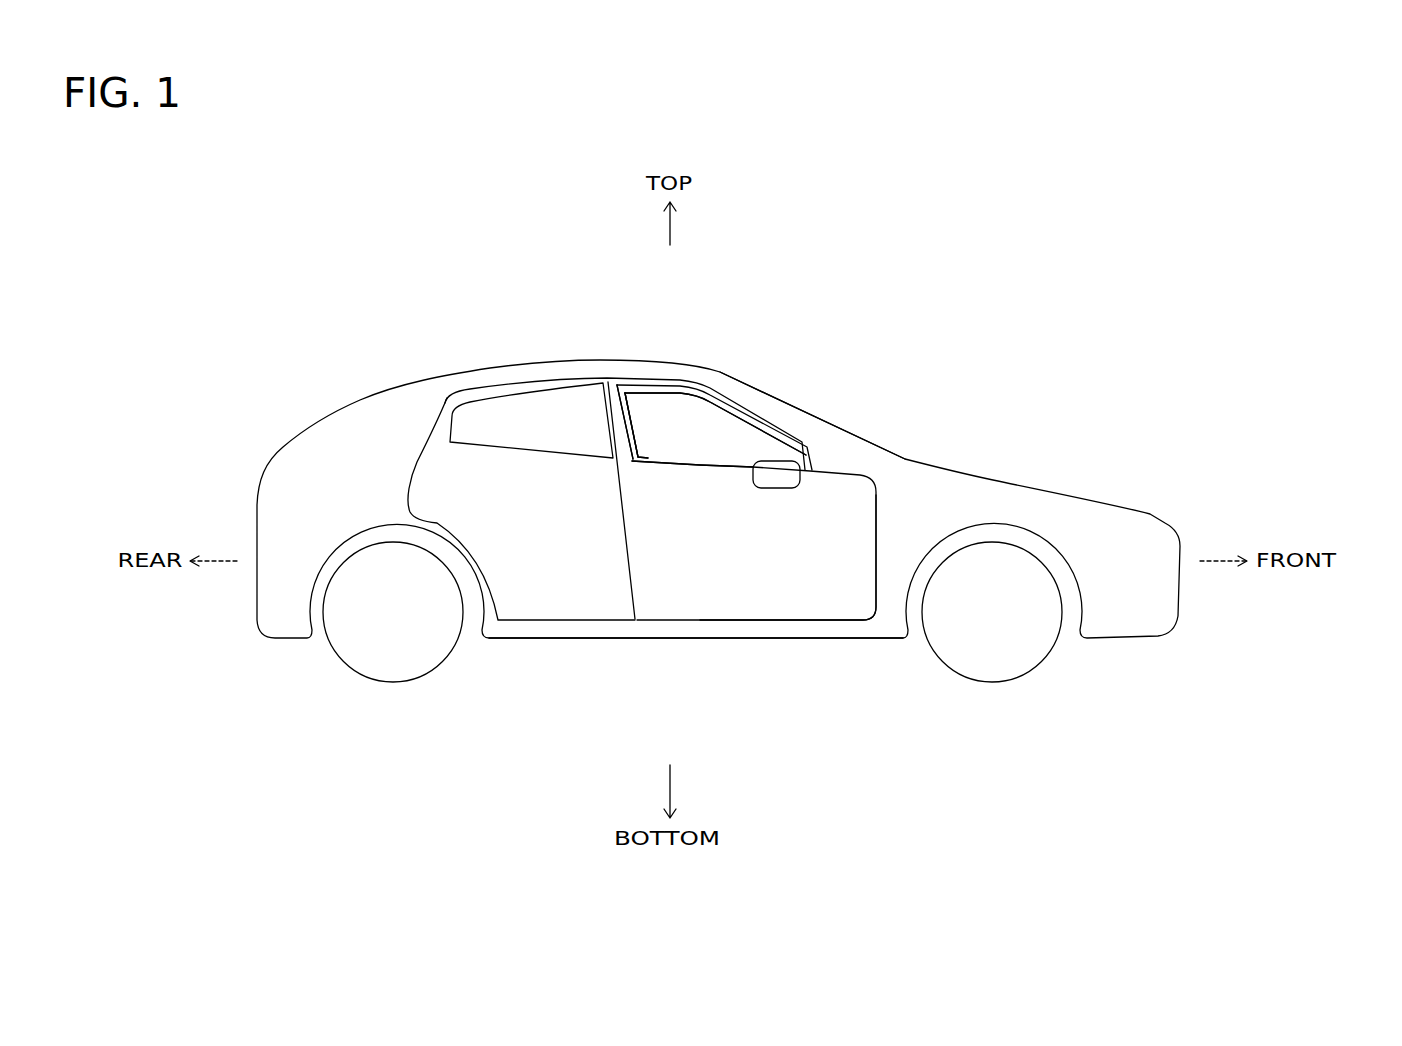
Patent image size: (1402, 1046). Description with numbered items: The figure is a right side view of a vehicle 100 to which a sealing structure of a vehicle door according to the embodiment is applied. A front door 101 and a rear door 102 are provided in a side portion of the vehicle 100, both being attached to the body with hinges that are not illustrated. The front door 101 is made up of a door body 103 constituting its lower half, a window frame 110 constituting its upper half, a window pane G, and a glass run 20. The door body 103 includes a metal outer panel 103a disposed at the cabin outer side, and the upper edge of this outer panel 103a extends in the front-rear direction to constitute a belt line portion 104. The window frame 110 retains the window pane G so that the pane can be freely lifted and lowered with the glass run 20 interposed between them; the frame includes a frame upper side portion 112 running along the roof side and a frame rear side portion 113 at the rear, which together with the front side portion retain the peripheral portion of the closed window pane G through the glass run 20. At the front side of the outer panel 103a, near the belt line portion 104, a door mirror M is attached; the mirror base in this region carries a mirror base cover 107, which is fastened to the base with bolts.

The vehicle 100 is at (613, 347).
The front door 101 is at (770, 610).
The rear door 102 is at (575, 609).
The door body 103 is at (846, 602).
The outer panel 103a is at (695, 624).
The belt line portion 104 is at (713, 468).
The mirror base cover 107 is at (838, 471).
The window frame 110 is at (768, 411).
The frame upper side portion 112 is at (730, 395).
The frame rear side portion 113 is at (640, 421).
The glass run 20 is at (780, 432).
The window pane G is at (683, 427).
The door mirror M is at (805, 461).